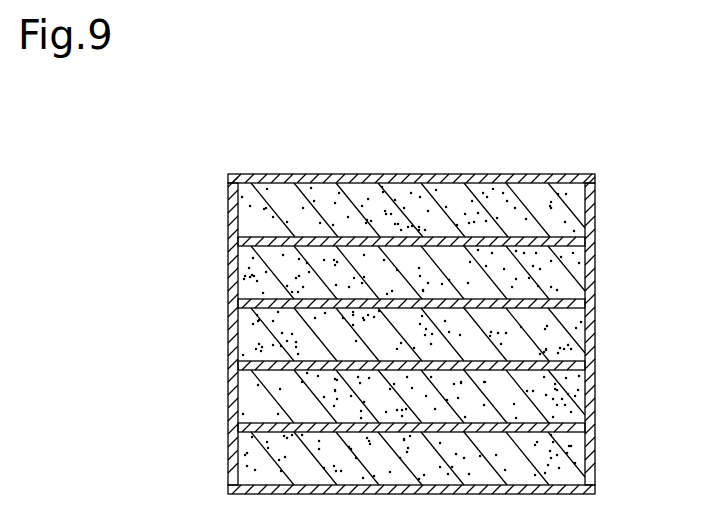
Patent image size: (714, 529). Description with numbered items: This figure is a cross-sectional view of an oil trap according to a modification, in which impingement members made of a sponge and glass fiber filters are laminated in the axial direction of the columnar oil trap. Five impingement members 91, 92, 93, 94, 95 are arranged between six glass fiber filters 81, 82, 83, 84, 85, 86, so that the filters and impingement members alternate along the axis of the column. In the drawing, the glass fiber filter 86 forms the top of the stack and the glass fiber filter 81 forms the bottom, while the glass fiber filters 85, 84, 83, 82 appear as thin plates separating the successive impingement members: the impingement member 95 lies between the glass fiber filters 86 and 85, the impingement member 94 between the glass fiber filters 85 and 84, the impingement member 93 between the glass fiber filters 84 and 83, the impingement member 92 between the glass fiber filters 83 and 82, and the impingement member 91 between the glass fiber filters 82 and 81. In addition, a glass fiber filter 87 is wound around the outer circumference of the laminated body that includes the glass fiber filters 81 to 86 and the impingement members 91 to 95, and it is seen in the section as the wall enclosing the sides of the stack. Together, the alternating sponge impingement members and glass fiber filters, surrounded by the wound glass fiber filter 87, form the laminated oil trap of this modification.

The glass fiber filter 81 is at (256, 488).
The glass fiber filter 82 is at (252, 427).
The glass fiber filter 83 is at (252, 365).
The glass fiber filter 84 is at (252, 303).
The glass fiber filter 85 is at (252, 240).
The glass fiber filter 86 is at (252, 178).
The glass fiber filter 87 is at (228, 437).
The impingement member 91 is at (583, 452).
The impingement member 92 is at (583, 390).
The impingement member 93 is at (583, 329).
The impingement member 94 is at (583, 267).
The impingement member 95 is at (583, 204).